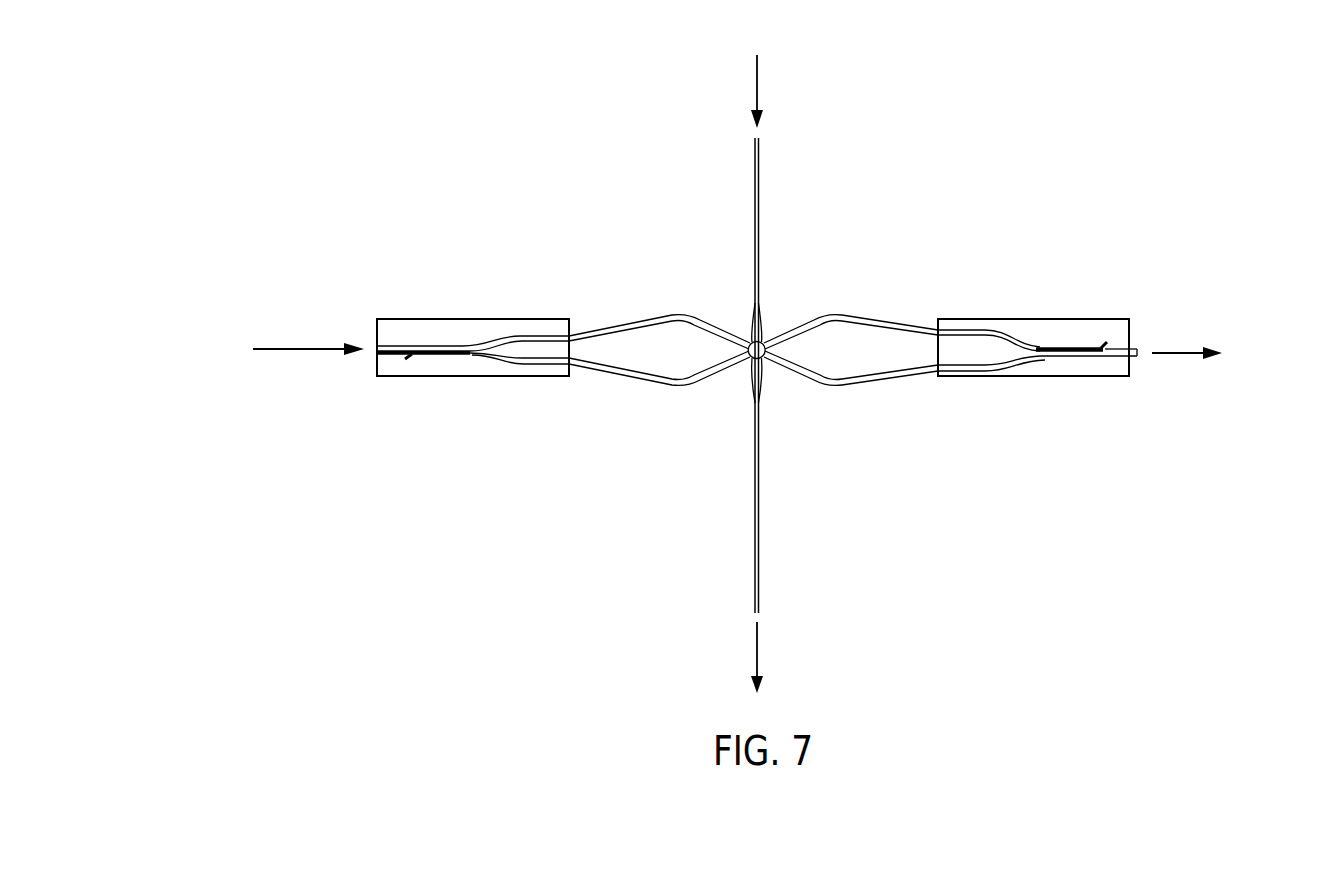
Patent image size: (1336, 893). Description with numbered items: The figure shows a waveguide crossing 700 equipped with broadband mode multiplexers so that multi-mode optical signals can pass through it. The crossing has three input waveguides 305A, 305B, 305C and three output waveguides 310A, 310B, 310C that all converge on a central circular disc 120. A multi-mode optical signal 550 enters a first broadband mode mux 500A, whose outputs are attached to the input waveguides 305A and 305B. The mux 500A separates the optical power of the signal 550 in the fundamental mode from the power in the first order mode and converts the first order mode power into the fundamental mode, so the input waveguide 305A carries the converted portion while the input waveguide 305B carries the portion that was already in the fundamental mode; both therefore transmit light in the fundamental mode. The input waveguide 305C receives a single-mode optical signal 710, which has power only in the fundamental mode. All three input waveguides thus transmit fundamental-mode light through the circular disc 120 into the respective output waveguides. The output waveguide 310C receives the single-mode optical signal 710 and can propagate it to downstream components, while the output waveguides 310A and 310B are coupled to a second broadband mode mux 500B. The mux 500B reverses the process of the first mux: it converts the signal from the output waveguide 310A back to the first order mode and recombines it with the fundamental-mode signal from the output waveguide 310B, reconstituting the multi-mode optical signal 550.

The waveguide crossing 700 is at (1187, 75).
The single-mode optical signal 710 is at (757, 80).
The multi-mode optical signal 550 is at (328, 346).
The input waveguide 305A is at (714, 378).
The input waveguide 305B is at (715, 327).
The input waveguide 305C is at (761, 308).
The output waveguide 310A is at (795, 328).
The output waveguide 310B is at (795, 367).
The output waveguide 310C is at (760, 384).
The circular disc 120 is at (752, 372).
The first broadband mode mux 500A is at (443, 377).
The second broadband mode mux 500B is at (1055, 377).